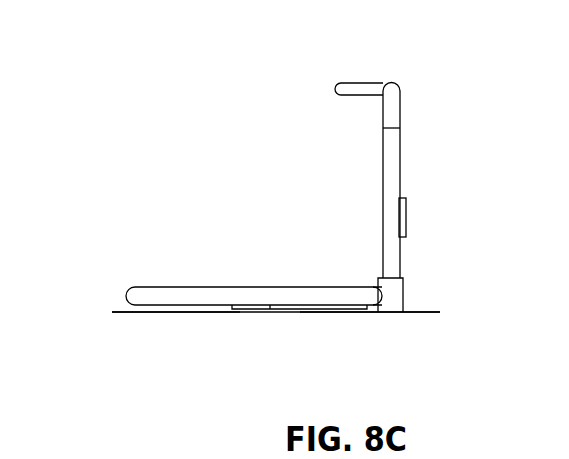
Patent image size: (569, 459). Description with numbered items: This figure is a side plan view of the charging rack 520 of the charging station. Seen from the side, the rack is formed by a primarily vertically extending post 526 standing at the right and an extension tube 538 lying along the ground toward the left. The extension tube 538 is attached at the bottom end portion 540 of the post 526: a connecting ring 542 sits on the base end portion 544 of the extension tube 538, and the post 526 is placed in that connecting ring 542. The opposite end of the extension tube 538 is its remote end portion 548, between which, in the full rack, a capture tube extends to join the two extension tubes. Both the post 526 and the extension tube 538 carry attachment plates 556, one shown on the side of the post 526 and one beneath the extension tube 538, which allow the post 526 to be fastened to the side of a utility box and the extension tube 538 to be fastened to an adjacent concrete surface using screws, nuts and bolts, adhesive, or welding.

The charging rack 520 is at (189, 92).
The post 526 is at (392, 143).
The attachment plate 556 is at (254, 308).
The connecting ring 542 is at (398, 292).
The bottom end portion 540 is at (451, 305).
The remote end portion 548 is at (126, 320).
The extension tube 538 is at (187, 300).
The base end portion 544 is at (371, 323).